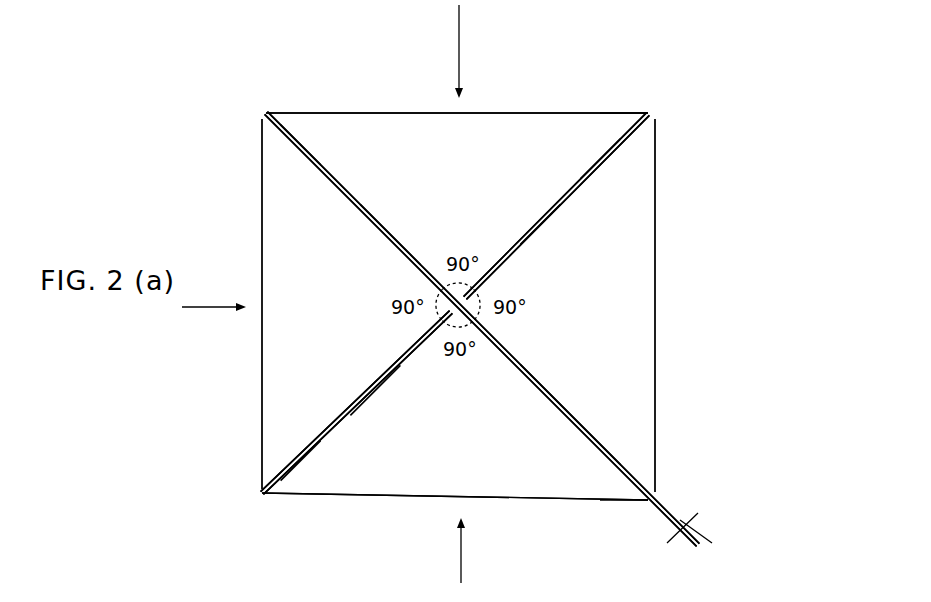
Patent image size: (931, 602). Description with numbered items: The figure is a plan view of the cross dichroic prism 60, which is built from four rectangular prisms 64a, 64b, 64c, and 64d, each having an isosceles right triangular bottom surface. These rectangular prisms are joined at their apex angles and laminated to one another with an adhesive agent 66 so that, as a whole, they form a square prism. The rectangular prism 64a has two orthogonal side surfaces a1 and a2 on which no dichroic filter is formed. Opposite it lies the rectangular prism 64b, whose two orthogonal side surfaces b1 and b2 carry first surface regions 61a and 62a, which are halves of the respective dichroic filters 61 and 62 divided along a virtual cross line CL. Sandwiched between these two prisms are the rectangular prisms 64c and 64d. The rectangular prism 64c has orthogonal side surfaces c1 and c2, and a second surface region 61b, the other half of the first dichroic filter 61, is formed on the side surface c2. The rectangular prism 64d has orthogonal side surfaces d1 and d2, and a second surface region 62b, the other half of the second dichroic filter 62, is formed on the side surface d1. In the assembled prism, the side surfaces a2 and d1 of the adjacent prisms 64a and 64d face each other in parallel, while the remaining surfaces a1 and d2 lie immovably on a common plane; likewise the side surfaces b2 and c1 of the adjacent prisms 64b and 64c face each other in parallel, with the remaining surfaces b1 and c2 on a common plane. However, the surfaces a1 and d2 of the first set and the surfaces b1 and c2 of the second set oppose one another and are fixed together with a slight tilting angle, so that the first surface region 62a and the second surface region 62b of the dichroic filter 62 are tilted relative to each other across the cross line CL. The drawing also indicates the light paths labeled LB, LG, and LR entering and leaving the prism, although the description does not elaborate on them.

The cross dichroic prism 60 is at (651, 108).
The first dichroic filter 61 is at (316, 148).
The first surface region of first dichroic filter 61a is at (628, 462).
The second surface region of first dichroic filter 61b is at (330, 180).
The second dichroic filter 62 is at (605, 152).
The first surface region of second dichroic filter 62a is at (621, 151).
The second surface region of second dichroic filter 62b is at (302, 462).
The rectangular prism 64a is at (262, 447).
The rectangular prism 64b is at (648, 270).
The rectangular prism 64c is at (303, 112).
The rectangular prism 64d is at (563, 500).
The adhesive agent 66 is at (548, 226).
The side surface a1 is at (388, 228).
The side surface a2 is at (378, 386).
The side surface b1 is at (619, 502).
The side surface b2 is at (628, 112).
The side surface c1 is at (597, 180).
The side surface c2 is at (300, 147).
The side surface d1 is at (303, 442).
The side surface d2 is at (588, 432).
The virtual cross line CL is at (468, 312).
The blue light beam LB is at (460, 48).
The green light beam LG is at (463, 563).
The red light beam LR is at (198, 304).